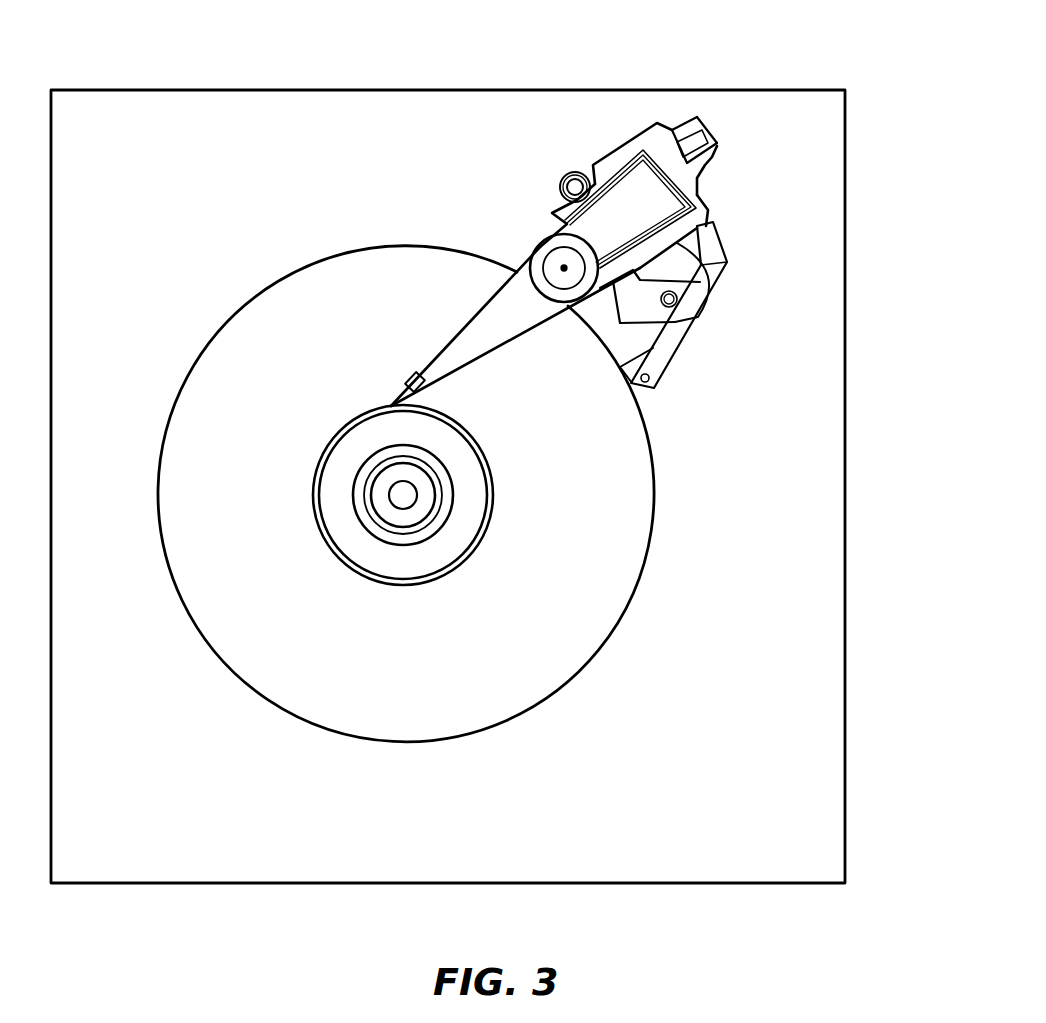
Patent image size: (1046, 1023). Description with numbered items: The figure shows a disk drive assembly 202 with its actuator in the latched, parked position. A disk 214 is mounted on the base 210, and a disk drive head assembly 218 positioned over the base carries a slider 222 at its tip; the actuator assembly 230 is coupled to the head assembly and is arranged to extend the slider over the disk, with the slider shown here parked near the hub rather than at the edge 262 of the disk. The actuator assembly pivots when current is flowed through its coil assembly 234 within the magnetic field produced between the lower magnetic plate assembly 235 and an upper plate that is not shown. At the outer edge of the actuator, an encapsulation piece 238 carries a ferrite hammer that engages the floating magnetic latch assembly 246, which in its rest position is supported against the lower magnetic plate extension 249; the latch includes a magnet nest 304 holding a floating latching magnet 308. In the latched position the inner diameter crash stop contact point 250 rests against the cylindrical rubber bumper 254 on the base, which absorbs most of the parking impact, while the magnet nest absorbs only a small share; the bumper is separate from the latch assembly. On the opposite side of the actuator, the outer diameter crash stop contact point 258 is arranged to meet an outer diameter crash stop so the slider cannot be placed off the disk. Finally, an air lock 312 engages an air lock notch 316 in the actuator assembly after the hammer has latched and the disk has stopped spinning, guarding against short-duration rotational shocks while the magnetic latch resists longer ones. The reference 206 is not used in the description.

The disk drive assembly 202 is at (798, 72).
The actuator arm 206 is at (471, 339).
The base 210 is at (705, 884).
The disk 214 is at (449, 494).
The disk drive head assembly 218 is at (507, 351).
The slider 222 is at (398, 387).
The actuator assembly 230 is at (518, 222).
The coil assembly 234 is at (708, 202).
The lower magnetic plate assembly 235 is at (708, 307).
The encapsulation piece 238 is at (718, 163).
The floating magnetic latch assembly 246 is at (726, 103).
The lower magnetic plate extension 249 is at (686, 122).
The inner diameter crash stop contact point 250 is at (600, 180).
The inner diameter bumper 254 is at (558, 186).
The outer diameter crash stop contact point 258 is at (711, 258).
The edge 262 is at (648, 568).
The magnet nest 304 is at (719, 142).
The floating latching magnet 308 is at (688, 133).
The air lock 312 is at (704, 312).
The air lock notch 316 is at (713, 222).